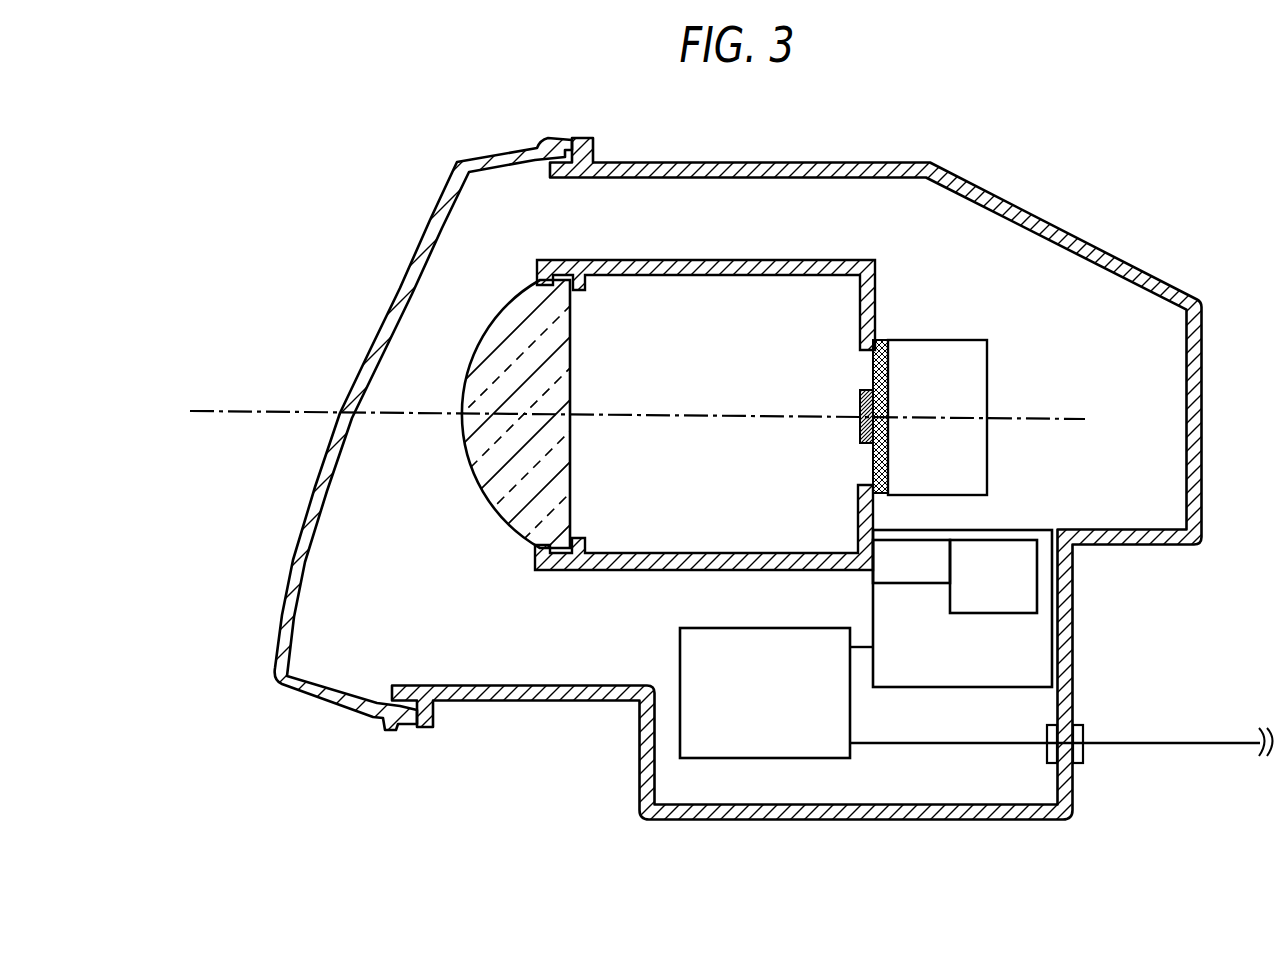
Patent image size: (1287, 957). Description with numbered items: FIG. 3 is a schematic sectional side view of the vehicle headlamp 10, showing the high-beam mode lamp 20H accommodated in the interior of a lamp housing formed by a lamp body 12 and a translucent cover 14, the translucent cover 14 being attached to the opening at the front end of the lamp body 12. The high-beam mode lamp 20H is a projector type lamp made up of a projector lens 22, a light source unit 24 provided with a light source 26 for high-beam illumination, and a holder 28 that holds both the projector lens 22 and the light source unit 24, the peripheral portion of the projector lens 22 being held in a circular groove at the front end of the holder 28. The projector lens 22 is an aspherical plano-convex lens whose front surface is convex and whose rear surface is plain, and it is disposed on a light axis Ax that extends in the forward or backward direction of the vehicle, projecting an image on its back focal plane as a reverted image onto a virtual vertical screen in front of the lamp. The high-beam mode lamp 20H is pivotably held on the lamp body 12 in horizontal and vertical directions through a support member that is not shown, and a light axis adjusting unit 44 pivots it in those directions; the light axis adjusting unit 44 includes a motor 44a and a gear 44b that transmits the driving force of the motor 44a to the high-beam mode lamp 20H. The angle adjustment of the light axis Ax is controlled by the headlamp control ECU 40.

The vehicle headlamp 10 is at (585, 810).
The lamp body 12 is at (1055, 230).
The translucent cover 14 is at (415, 221).
The high-beam mode lamp 20H is at (452, 456).
The projector lens 22 is at (505, 313).
The light source unit 24 is at (929, 320).
The light source 26 is at (860, 407).
The holder 28 is at (706, 260).
The headlamp control ECU 40 is at (765, 628).
The light axis adjusting unit 44 is at (960, 688).
The motor 44a is at (993, 537).
The gear 44b is at (913, 537).
The light axis Ax is at (230, 413).